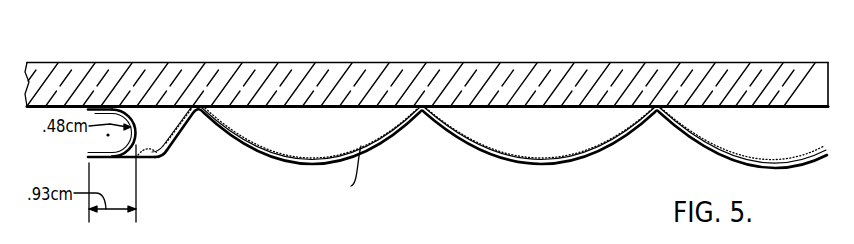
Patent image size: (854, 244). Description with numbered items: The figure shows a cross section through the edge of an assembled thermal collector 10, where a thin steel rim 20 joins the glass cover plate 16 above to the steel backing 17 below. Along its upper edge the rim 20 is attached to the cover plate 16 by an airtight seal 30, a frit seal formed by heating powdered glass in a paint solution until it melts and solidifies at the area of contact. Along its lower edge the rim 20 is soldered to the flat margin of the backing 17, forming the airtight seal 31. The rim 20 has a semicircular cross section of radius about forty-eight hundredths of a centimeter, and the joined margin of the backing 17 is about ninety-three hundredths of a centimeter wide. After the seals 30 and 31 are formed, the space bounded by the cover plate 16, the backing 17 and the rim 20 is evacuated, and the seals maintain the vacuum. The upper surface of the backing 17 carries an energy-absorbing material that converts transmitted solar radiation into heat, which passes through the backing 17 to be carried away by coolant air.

The vehicle door inner panel assembly 10 is at (752, 63).
The glass cover plate 16 is at (322, 80).
The backing 17 is at (798, 163).
The rim 20 is at (128, 143).
The airtight seal 30 is at (137, 108).
The airtight seal 31 is at (157, 164).